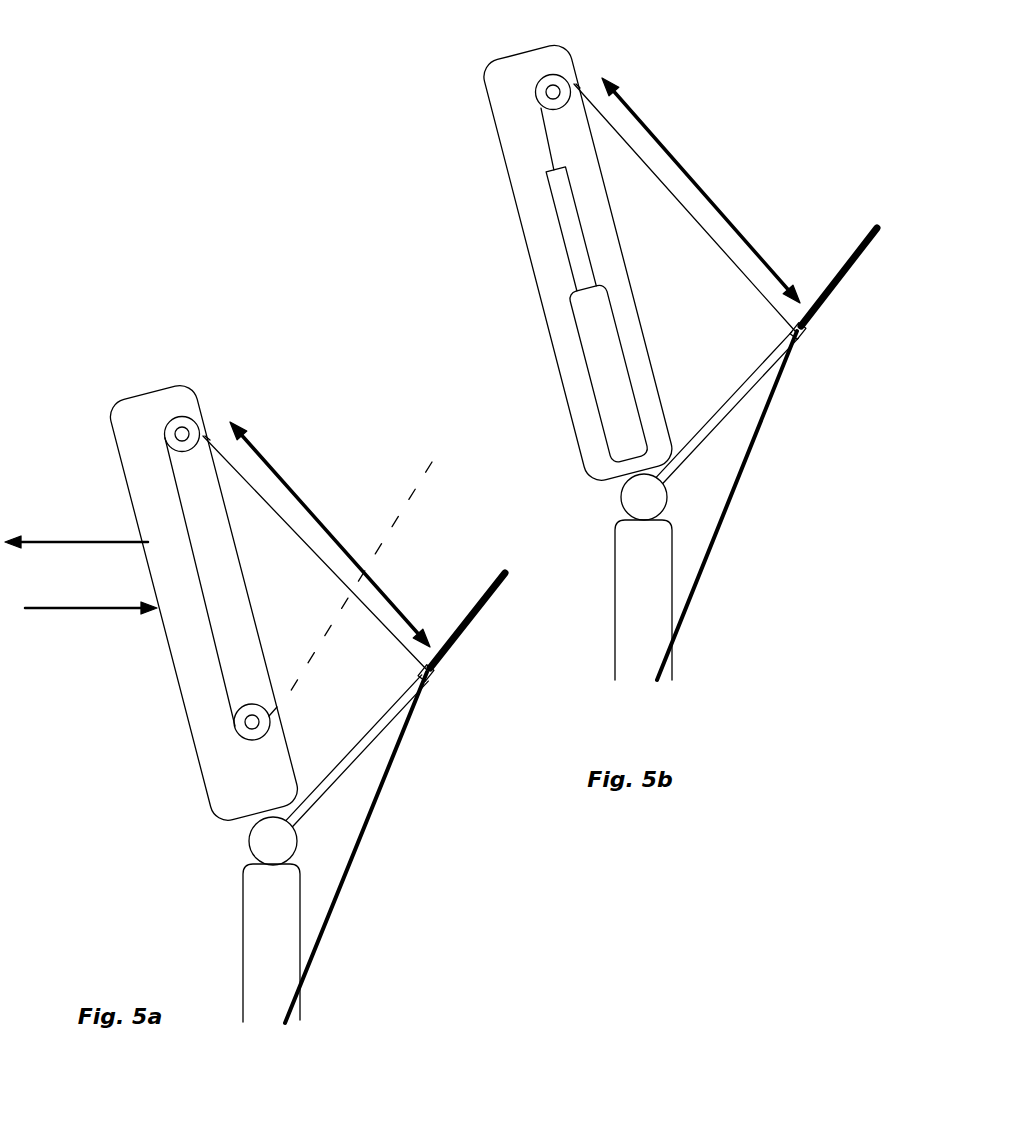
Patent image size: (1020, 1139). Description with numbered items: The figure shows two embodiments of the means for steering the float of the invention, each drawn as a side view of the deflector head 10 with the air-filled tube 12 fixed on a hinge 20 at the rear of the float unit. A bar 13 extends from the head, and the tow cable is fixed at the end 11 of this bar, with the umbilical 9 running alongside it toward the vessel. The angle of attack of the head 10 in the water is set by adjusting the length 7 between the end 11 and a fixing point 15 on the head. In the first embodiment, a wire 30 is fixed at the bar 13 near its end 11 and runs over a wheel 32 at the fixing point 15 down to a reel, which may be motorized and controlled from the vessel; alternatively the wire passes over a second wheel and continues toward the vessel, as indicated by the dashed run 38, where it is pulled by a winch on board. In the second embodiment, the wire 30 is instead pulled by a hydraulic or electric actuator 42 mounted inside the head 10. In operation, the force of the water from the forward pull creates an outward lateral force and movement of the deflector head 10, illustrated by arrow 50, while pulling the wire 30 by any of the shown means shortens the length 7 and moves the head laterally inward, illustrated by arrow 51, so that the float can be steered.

In FIG. 5A, the length 7 is at (263, 458).
In FIG. 5B, the length 7 is at (647, 128).
In FIG. 5A, the umbilical 9 is at (357, 852).
In FIG. 5B, the umbilical 9 is at (718, 533).
In FIG. 5A, the head 10 is at (147, 480).
In FIG. 5B, the head 10 is at (505, 160).
In FIG. 5A, the end of bar 11 is at (432, 680).
In FIG. 5B, the end of bar 11 is at (801, 339).
In FIG. 5A, the air-filled tube 12 is at (260, 900).
In FIG. 5B, the air-filled tube 12 is at (620, 560).
In FIG. 5A, the bar 13 is at (357, 740).
In FIG. 5B, the bar 13 is at (720, 410).
In FIG. 5A, the fixing point 15 is at (210, 438).
In FIG. 5B, the fixing point 15 is at (579, 85).
In FIG. 5A, the hinge 20 is at (272, 843).
In FIG. 5B, the hinge 20 is at (633, 496).
In FIG. 5A, the wire 30 is at (297, 537).
In FIG. 5B, the wire 30 is at (690, 215).
In FIG. 5A, the wheel 32 is at (180, 433).
In FIG. 5B, the wheel 32 is at (551, 91).
In FIG. 5A, the wire run to vessel 38 is at (393, 527).
In FIG. 5B, the hydraulic or electric actuator 42 is at (587, 352).
In FIG. 5A, the arrow (outward lateral force) 50 is at (48, 541).
In FIG. 5A, the arrow (inward movement) 51 is at (108, 610).